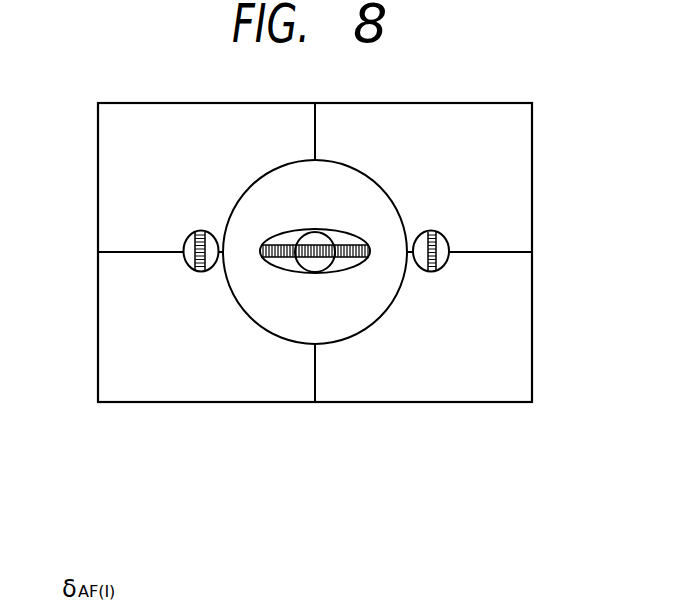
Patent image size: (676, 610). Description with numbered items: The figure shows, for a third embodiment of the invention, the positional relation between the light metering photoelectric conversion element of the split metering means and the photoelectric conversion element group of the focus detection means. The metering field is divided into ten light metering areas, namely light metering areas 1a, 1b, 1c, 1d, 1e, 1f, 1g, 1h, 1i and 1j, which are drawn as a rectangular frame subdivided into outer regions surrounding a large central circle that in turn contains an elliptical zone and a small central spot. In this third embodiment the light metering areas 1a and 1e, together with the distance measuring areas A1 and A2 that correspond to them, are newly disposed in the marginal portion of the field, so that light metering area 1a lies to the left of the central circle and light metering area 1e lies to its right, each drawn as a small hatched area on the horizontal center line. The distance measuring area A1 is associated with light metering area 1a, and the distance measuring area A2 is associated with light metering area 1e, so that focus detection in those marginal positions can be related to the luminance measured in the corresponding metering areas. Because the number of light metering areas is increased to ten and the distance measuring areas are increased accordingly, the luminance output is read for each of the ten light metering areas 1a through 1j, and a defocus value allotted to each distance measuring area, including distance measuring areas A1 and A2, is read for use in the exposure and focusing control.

The light metering area 1a is at (192, 232).
The light metering area 1b is at (283, 238).
The light metering area 1c is at (317, 238).
The light metering area 1d is at (363, 223).
The light metering area 1e is at (450, 227).
The light metering area 1f is at (283, 323).
The light metering area 1g is at (117, 223).
The light metering area 1h is at (513, 213).
The light metering area 1i is at (162, 378).
The light metering area 1j is at (393, 367).
The distance measuring area A1 is at (187, 267).
The distance measuring area A2 is at (437, 260).